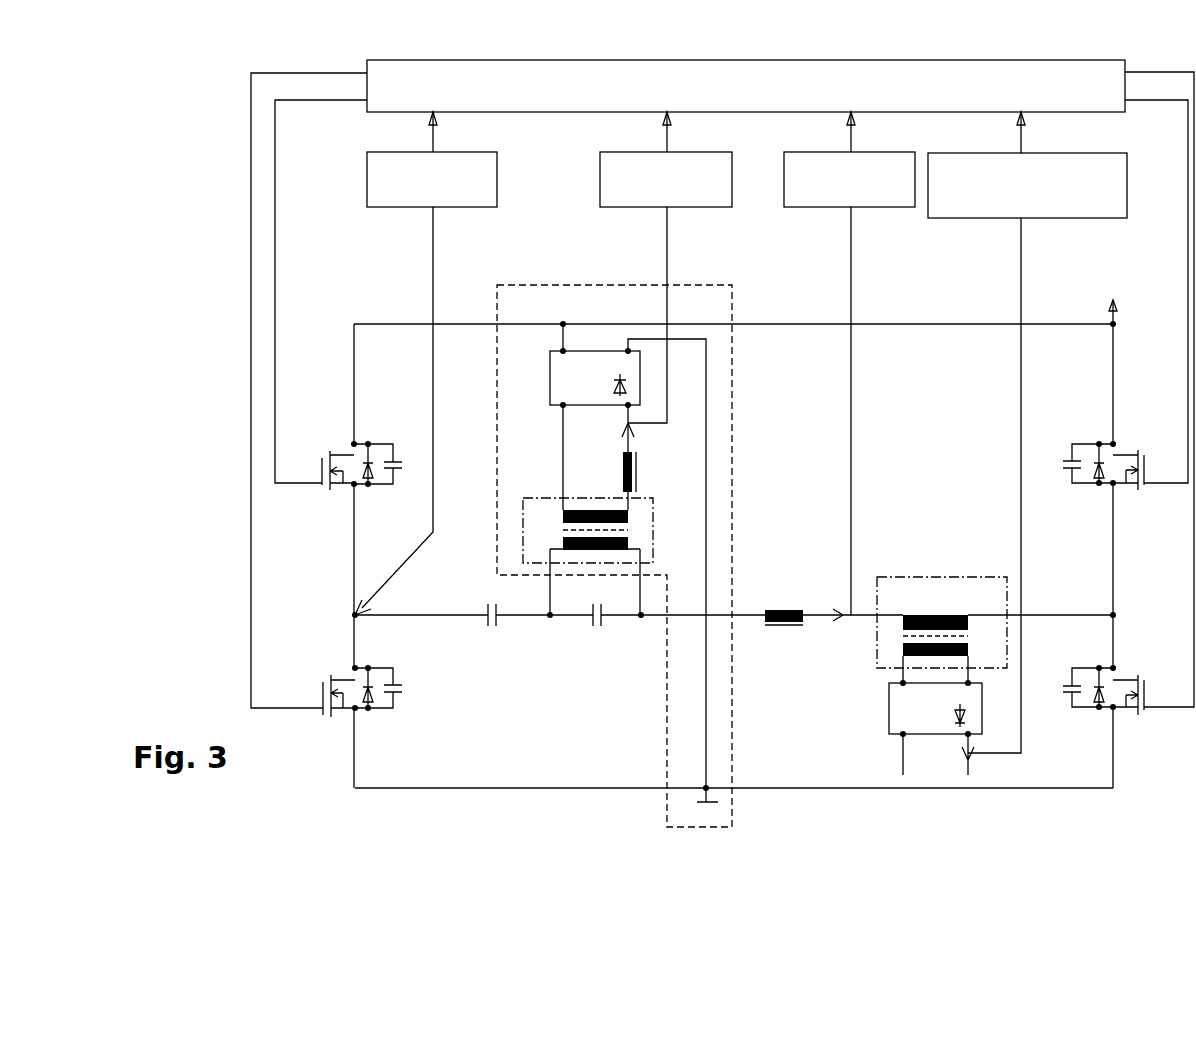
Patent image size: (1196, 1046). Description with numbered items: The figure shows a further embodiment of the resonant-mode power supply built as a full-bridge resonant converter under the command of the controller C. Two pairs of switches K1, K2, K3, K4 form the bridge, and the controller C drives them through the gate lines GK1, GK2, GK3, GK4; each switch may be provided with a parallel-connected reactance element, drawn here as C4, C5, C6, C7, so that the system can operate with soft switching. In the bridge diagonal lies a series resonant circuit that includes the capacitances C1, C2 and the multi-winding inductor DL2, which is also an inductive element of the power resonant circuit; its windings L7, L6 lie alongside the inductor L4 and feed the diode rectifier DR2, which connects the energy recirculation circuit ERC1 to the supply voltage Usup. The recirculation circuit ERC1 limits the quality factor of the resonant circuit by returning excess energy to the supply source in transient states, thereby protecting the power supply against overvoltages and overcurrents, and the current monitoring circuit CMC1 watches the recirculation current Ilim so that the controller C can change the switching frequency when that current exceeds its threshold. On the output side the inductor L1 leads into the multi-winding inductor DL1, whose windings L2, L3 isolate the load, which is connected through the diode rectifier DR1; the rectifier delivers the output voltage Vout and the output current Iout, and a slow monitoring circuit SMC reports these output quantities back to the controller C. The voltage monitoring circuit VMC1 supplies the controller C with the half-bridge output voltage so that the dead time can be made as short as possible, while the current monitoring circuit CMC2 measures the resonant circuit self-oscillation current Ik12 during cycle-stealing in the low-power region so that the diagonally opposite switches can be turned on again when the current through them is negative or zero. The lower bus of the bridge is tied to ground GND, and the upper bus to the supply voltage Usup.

The controller C is at (756, 75).
The gate control line 1 GK1 is at (340, 285).
The gate control line 2 GK2 is at (328, 384).
The gate control line 3 GK3 is at (1135, 285).
The gate control line 4 GK4 is at (1138, 383).
The voltage monitoring circuit VMC1 is at (406, 363).
The current monitoring circuit CMC1 is at (666, 267).
The current monitoring circuit CMC2 is at (849, 363).
The slow circuit monitoring output V or I SMC is at (1046, 432).
The energy recirculation circuit ERC1 is at (617, 545).
The diode rectifier DR2 is at (595, 366).
The diode rectifier DR1 is at (935, 696).
The multi-winding inductor DL2 is at (570, 565).
The multi-winding inductor DL1 is at (872, 676).
The inductor L1 is at (784, 605).
The inductor L2 is at (935, 610).
The quality-factor limiter winding L3 is at (951, 650).
The load circuit winding L4 is at (643, 472).
The winding L6 is at (580, 540).
The winding L7 is at (580, 513).
The capacitance C1 is at (495, 603).
The resultant capacitance C2 is at (598, 603).
The reactance element C4 is at (387, 461).
The capacitor C5 is at (389, 685).
The capacitor C6 is at (1079, 461).
The capacitor C7 is at (1079, 685).
The switch K1 is at (323, 467).
The switch K2 is at (324, 692).
The switch K3 is at (1144, 467).
The switch K4 is at (1144, 691).
The supply voltage Usup is at (1129, 292).
The ground GND is at (703, 806).
The recirculation circuit current Ilim is at (612, 428).
The resonant circuit self-oscillation current Ik12 is at (849, 601).
The output voltage Vout is at (925, 755).
The output current Iout is at (982, 759).